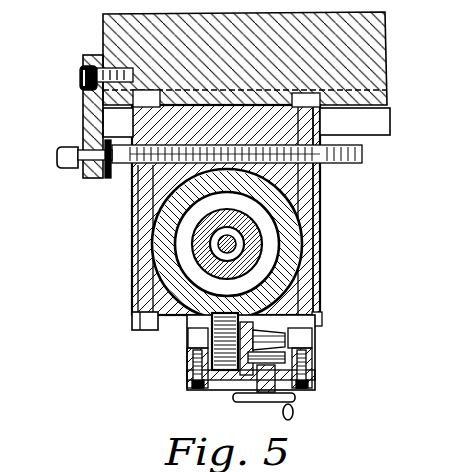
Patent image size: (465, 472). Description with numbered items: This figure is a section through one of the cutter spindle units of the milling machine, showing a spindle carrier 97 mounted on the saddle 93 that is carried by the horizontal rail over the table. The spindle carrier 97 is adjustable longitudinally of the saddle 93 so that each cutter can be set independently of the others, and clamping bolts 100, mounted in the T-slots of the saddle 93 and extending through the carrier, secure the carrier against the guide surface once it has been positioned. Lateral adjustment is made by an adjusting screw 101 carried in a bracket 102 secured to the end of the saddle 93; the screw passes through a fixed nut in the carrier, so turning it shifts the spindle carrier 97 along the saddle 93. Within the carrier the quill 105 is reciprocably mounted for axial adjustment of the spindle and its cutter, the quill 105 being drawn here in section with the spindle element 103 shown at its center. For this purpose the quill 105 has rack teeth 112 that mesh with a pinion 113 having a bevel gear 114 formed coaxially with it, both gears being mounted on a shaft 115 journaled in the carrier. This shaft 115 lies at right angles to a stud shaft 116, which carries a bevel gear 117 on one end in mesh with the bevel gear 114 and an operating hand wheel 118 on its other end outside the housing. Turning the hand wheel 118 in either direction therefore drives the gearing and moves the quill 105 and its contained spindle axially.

The saddle 93 is at (387, 48).
The spindle carrier 97 is at (323, 219).
The clamping bolt 100 is at (133, 328).
The adjusting screw 101 is at (57, 160).
The bracket 102 is at (90, 119).
The bearing shaft 103 is at (195, 236).
The quill 105 is at (290, 255).
The rack teeth 112 is at (182, 341).
The pinion 113 is at (197, 347).
The bevel gear 114 is at (270, 327).
The shaft 115 is at (300, 340).
The stud shaft 116 is at (245, 386).
The bevel gear 117 is at (310, 348).
The hand wheel 118 is at (297, 398).